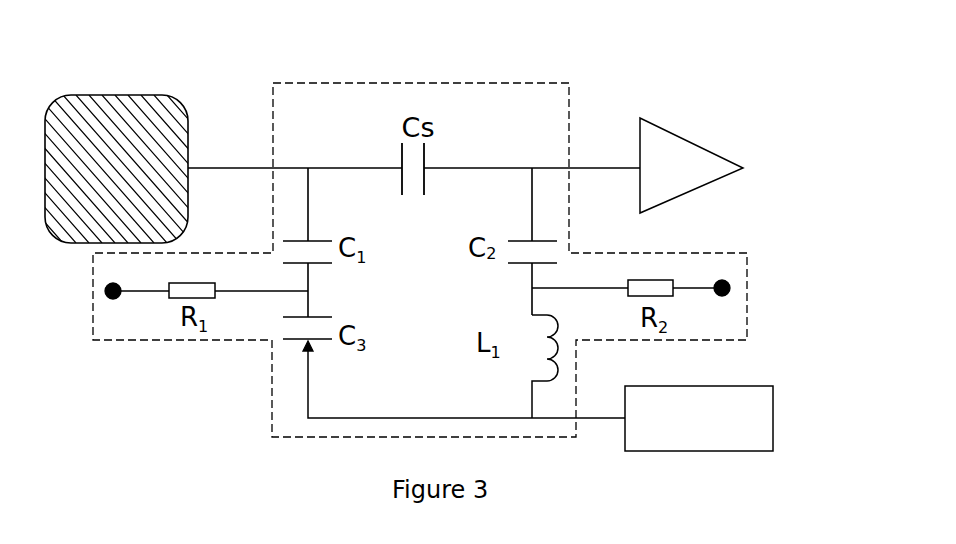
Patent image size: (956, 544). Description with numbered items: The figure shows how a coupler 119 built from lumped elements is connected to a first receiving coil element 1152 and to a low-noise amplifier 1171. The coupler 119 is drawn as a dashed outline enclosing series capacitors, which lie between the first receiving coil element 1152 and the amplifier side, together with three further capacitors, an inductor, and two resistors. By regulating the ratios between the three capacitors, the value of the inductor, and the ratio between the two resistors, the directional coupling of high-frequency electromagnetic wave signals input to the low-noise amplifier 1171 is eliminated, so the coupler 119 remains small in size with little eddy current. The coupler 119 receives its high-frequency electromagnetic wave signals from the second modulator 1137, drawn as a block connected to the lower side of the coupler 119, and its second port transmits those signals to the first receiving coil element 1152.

The first receiving coil element 1152 is at (117, 95).
The coupler 119 is at (541, 82).
The low-noise amplifier 1171 is at (686, 140).
The second modulator 1137 is at (773, 418).